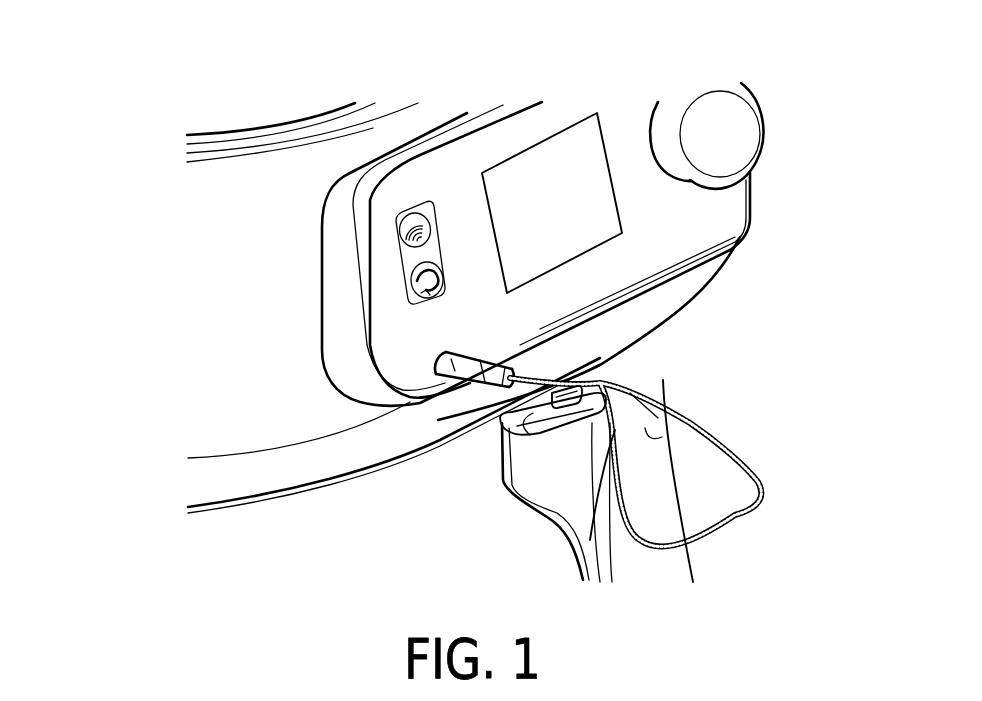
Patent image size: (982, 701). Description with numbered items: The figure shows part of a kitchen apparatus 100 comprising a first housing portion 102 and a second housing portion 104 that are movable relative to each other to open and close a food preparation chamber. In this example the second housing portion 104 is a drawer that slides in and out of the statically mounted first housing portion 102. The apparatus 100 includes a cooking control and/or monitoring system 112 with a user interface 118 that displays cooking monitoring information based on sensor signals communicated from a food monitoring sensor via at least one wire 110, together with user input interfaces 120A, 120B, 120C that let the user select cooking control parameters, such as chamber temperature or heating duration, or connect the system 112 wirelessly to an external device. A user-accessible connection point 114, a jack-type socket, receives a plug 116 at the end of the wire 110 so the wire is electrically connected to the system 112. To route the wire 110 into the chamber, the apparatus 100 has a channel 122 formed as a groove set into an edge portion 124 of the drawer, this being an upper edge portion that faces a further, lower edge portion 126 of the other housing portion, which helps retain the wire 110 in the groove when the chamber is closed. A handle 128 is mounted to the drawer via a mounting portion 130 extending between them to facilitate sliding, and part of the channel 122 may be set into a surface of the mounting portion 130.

The kitchen apparatus 100 is at (155, 83).
The first housing portion 102 is at (202, 478).
The second housing portion 104 is at (317, 522).
The wire 110 is at (763, 489).
The cooking control and/or monitoring system 112 is at (714, 209).
The user-accessible connection point 114 is at (438, 364).
The plug 116 is at (438, 380).
The user interface 118 is at (568, 137).
The user input interface 120A is at (415, 218).
The user input interface 120B is at (410, 287).
The user input interface 120C is at (747, 136).
The channel 122 is at (582, 388).
The edge portion 124 is at (503, 425).
The further edge portion 126 is at (560, 428).
The handle 128 is at (672, 430).
The mounting portion 130 is at (568, 497).